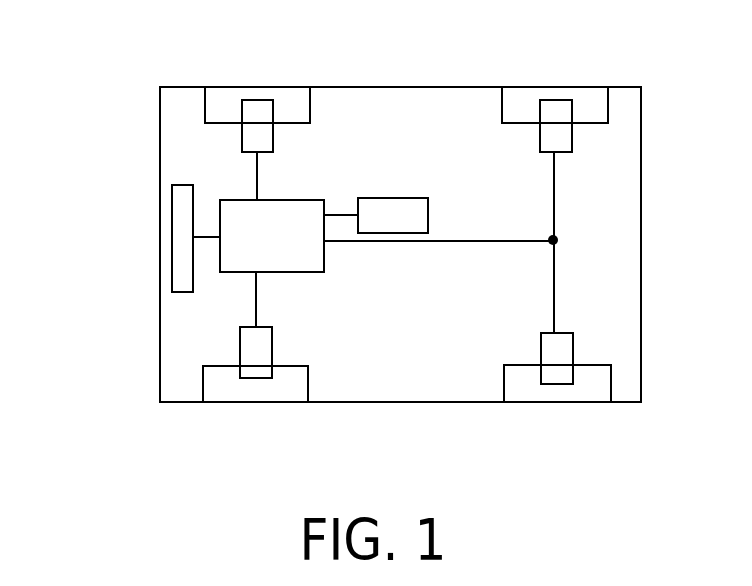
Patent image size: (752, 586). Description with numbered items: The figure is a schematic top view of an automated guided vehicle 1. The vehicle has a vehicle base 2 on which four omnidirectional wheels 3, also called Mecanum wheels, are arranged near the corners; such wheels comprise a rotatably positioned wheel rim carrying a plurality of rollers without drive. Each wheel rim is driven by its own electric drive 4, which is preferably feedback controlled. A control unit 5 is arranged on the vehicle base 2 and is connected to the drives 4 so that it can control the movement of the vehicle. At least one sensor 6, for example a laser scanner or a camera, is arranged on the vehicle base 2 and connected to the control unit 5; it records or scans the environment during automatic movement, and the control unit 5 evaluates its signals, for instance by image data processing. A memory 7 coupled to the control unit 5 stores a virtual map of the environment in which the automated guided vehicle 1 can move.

The automated guided vehicle 1 is at (102, 36).
The vehicle base 2 is at (390, 110).
The omnidirectional wheels 3 is at (228, 93).
The electric drive 4 is at (263, 132).
The control unit 5 is at (389, 236).
The sensor 6 is at (176, 230).
The memory 7 is at (420, 213).